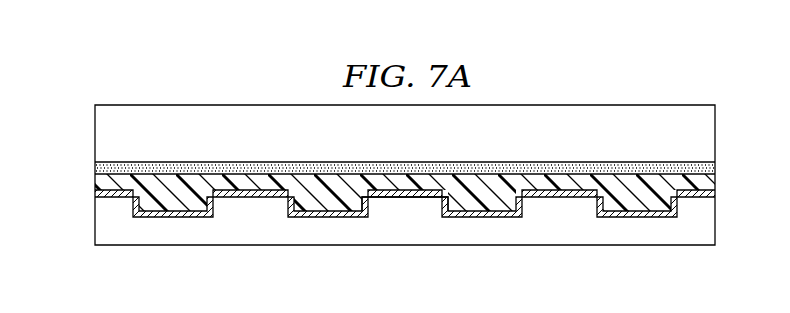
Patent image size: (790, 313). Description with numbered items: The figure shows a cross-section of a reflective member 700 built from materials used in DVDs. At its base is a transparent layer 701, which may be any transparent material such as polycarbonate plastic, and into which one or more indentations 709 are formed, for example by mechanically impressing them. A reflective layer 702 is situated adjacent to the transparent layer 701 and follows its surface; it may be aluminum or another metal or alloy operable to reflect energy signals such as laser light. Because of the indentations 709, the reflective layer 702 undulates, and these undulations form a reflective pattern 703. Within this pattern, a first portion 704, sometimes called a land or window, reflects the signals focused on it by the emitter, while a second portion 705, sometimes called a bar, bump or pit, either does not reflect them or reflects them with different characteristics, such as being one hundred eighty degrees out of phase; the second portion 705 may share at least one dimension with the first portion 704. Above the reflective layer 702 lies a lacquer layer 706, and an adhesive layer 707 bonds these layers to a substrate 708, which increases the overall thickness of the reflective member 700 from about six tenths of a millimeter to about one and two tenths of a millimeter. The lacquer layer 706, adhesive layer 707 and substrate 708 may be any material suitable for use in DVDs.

The reflective member 700 is at (134, 66).
The transparent layer 701 is at (636, 246).
The reflective layer 702 is at (170, 213).
The reflective pattern 703 is at (357, 238).
The first portion 704 is at (316, 230).
The second portion 705 is at (402, 215).
The lacquer layer 706 is at (99, 182).
The adhesive layer 707 is at (97, 168).
The substrate 708 is at (598, 110).
The indentations 709 is at (480, 212).